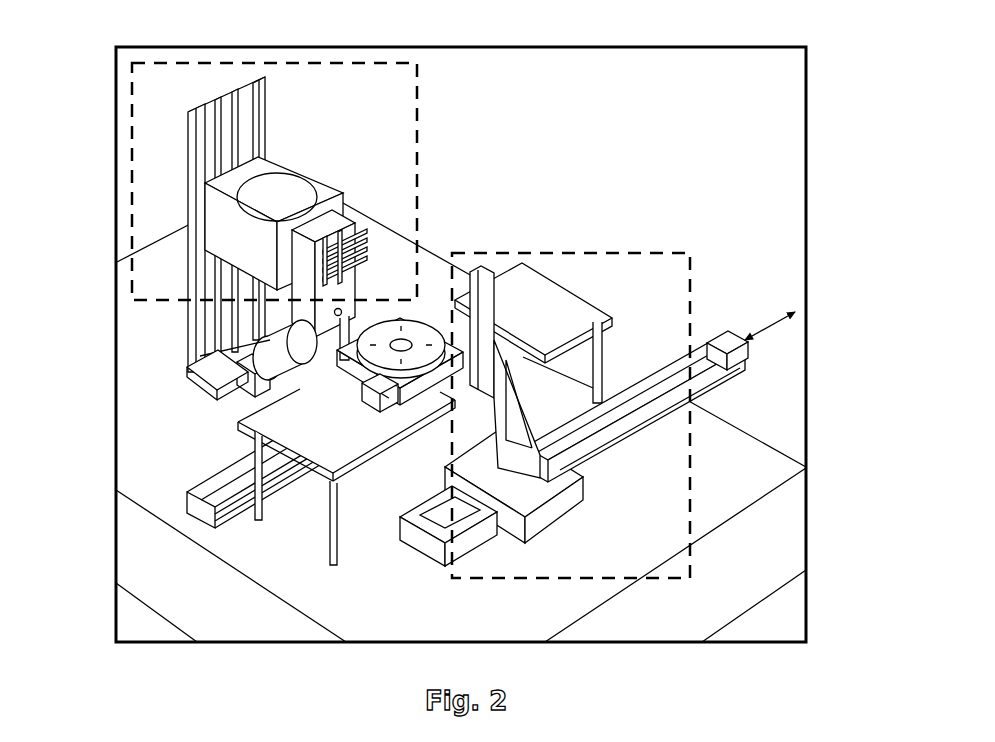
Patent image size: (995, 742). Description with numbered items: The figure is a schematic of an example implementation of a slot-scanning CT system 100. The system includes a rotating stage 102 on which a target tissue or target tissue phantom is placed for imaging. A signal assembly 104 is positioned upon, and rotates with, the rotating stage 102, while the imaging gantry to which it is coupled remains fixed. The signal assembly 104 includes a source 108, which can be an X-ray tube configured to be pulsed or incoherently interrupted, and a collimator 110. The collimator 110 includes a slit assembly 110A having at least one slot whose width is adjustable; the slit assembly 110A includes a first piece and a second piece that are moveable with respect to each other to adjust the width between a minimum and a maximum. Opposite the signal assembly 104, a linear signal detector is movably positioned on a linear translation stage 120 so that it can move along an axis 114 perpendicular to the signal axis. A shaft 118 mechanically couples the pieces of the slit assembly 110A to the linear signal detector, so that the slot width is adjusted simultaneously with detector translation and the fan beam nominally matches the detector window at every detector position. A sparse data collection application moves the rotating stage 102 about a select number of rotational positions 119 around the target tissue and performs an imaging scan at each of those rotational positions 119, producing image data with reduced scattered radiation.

The slot-scanning CT system 100 is at (607, 95).
The rotating stage 102 is at (445, 352).
The signal assembly 104 is at (133, 163).
The source 108 is at (290, 198).
The collimator 110 is at (300, 263).
The slit assembly 110A is at (350, 257).
The axis 114 is at (770, 318).
The shaft 118 is at (340, 463).
The rotational positions 119 is at (465, 293).
The linear translation stage 120 is at (657, 397).